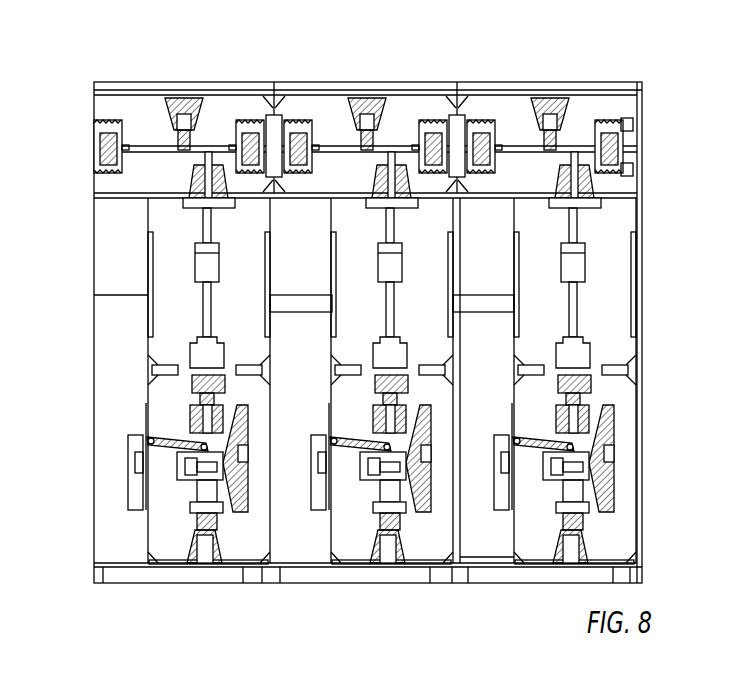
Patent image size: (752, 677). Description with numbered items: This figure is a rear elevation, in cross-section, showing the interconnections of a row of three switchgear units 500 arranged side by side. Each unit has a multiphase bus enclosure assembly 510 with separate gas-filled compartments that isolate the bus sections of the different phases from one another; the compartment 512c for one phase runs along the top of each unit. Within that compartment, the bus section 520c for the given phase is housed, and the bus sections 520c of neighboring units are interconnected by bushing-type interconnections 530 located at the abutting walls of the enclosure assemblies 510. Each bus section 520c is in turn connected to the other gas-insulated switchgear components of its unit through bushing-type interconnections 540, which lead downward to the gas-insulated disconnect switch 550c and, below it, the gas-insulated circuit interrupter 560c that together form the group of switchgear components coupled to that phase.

The switchgear unit 500 is at (369, 339).
The bus enclosure assembly 510 is at (133, 82).
The gas-filled compartment 512c is at (242, 115).
The bus section 520c is at (147, 148).
The bushing-type interconnection 530 is at (475, 122).
The bushing-type interconnection 540 is at (594, 183).
The gas-insulated disconnect switch 550c is at (588, 274).
The gas-insulated circuit interrupter 560c is at (610, 427).